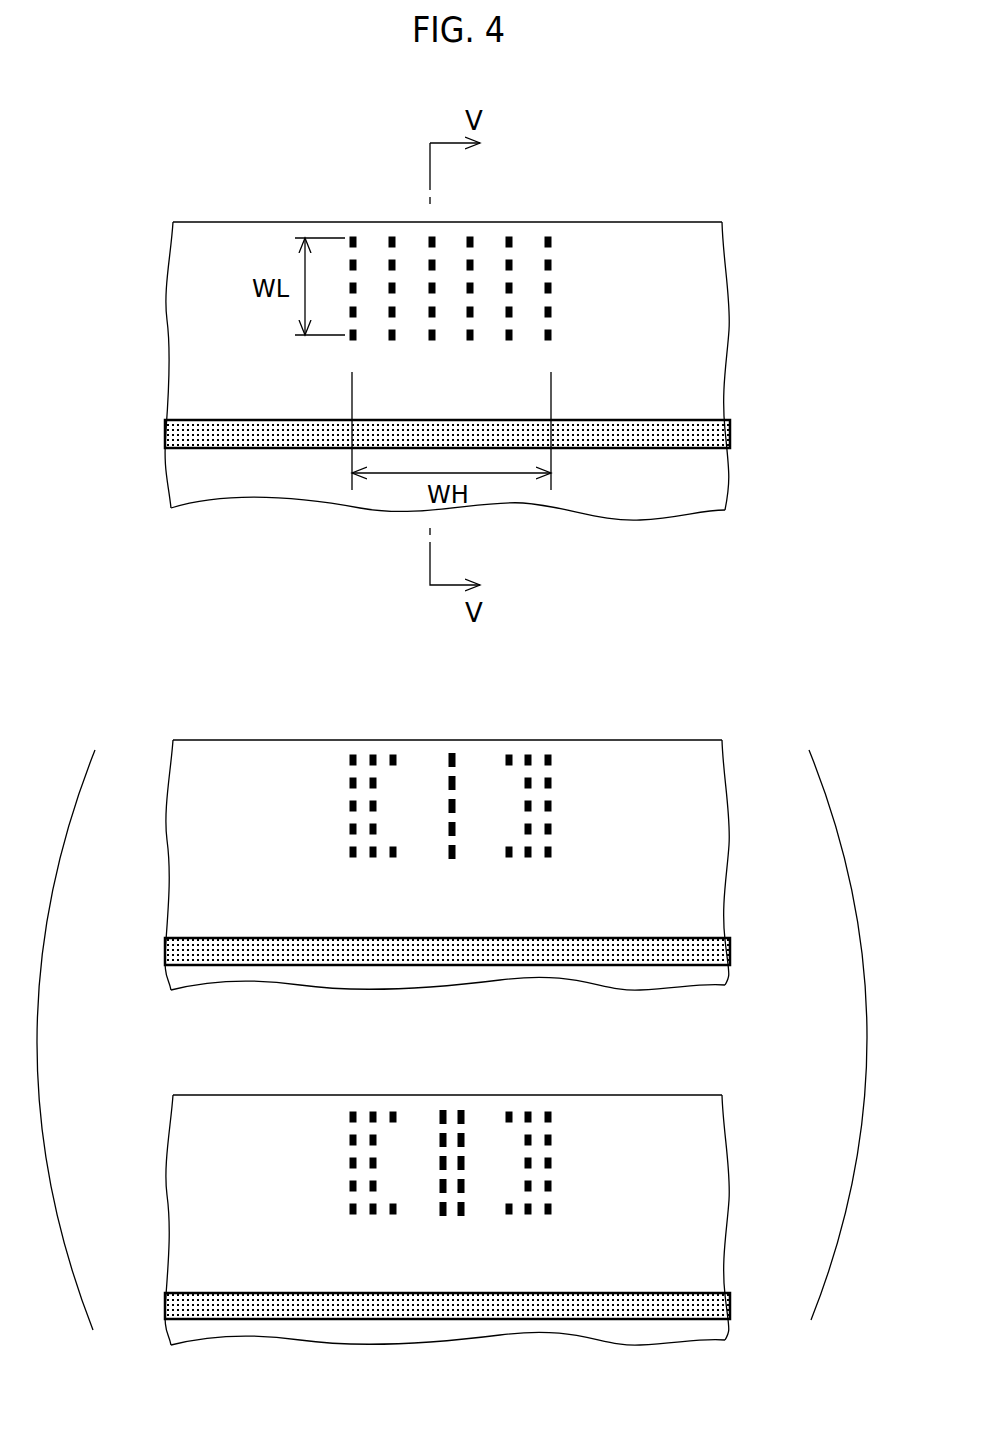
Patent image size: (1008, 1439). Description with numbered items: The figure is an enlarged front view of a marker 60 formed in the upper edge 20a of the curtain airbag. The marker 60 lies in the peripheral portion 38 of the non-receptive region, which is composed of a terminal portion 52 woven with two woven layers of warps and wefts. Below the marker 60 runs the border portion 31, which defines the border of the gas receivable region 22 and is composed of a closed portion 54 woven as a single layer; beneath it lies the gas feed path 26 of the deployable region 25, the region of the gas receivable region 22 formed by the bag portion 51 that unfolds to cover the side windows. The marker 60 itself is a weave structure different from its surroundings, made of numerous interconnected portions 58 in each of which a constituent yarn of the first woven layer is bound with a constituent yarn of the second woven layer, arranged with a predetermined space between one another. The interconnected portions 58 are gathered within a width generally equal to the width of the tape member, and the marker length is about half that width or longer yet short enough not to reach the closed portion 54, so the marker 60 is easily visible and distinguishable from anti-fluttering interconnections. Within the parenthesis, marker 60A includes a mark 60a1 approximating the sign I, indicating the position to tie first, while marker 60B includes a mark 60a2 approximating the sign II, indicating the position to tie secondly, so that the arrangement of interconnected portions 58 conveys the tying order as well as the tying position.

The upper edge 20a is at (233, 245).
The peripheral portion 38 is at (200, 350).
The terminal portion 52 is at (740, 318).
The border portion 31 is at (526, 376).
The closed portion 54 is at (720, 427).
The gas feed path 26 is at (530, 544).
The bag portion 51 is at (530, 544).
The deployable region 25 is at (530, 544).
The gas receivable region 22 is at (708, 472).
The interconnected portion 58 is at (453, 661).
The marker 60 is at (490, 200).
The marker 60A is at (388, 755).
The mark 60a1 is at (463, 763).
The marker 60B is at (390, 1113).
The mark 60a2 is at (467, 1123).